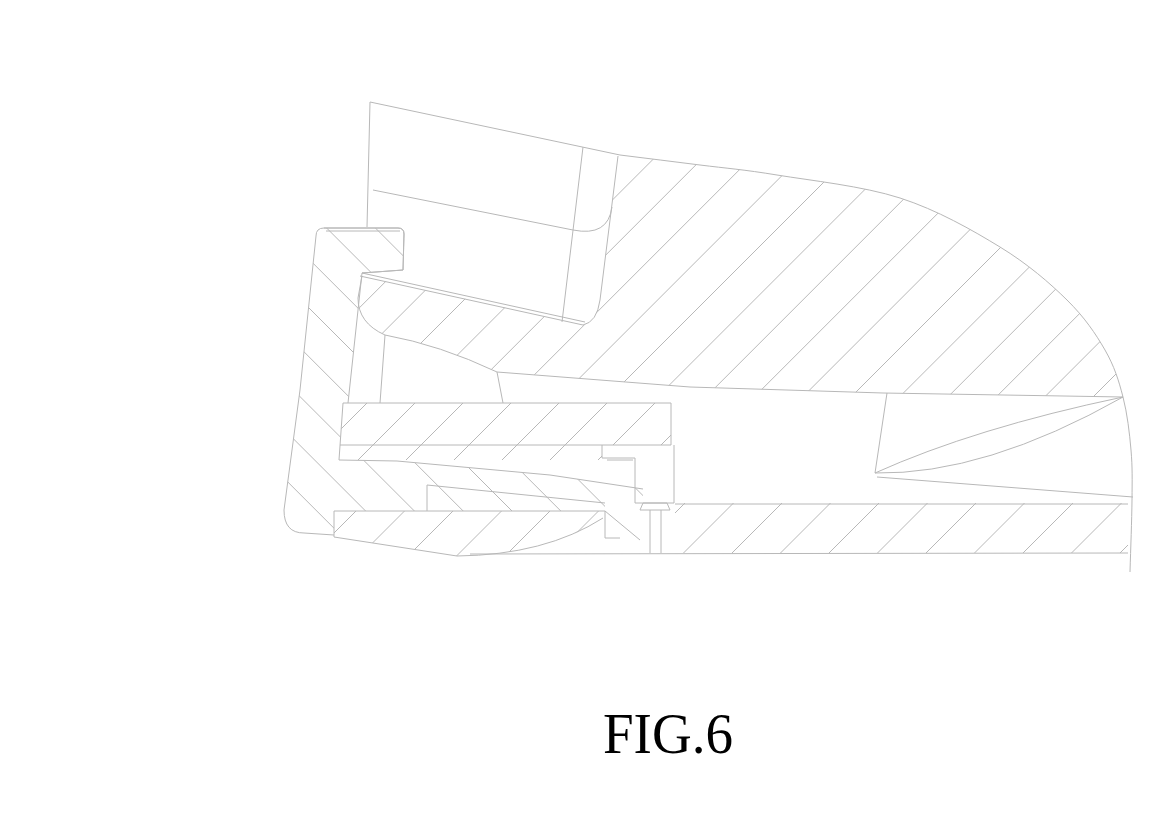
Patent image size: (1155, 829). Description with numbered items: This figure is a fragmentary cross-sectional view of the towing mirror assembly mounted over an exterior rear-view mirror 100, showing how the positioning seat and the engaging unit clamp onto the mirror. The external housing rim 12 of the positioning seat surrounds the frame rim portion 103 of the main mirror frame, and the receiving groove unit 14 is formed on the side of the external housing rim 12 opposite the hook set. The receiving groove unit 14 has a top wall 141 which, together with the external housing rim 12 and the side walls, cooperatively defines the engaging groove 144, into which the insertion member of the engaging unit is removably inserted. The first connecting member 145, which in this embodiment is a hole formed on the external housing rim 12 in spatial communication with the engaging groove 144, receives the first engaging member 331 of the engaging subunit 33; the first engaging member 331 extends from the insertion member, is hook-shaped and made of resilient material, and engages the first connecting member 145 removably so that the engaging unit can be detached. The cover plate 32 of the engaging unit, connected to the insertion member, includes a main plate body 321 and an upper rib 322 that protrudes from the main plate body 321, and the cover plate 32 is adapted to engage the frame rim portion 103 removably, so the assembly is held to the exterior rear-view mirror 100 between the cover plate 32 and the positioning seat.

The exterior rear-view mirror 100 is at (907, 230).
The frame rim portion 103 is at (381, 302).
The external housing rim 12 is at (919, 530).
The receiving groove unit 14 is at (676, 462).
The top wall 141 is at (457, 427).
The engaging groove 144 is at (553, 455).
The first connecting member 145 is at (655, 512).
The cover plate 32 is at (408, 315).
The main plate body 321 is at (408, 360).
The upper rib 322 is at (390, 252).
The engaging subunit 33 is at (629, 383).
The first engaging member 331 is at (560, 490).